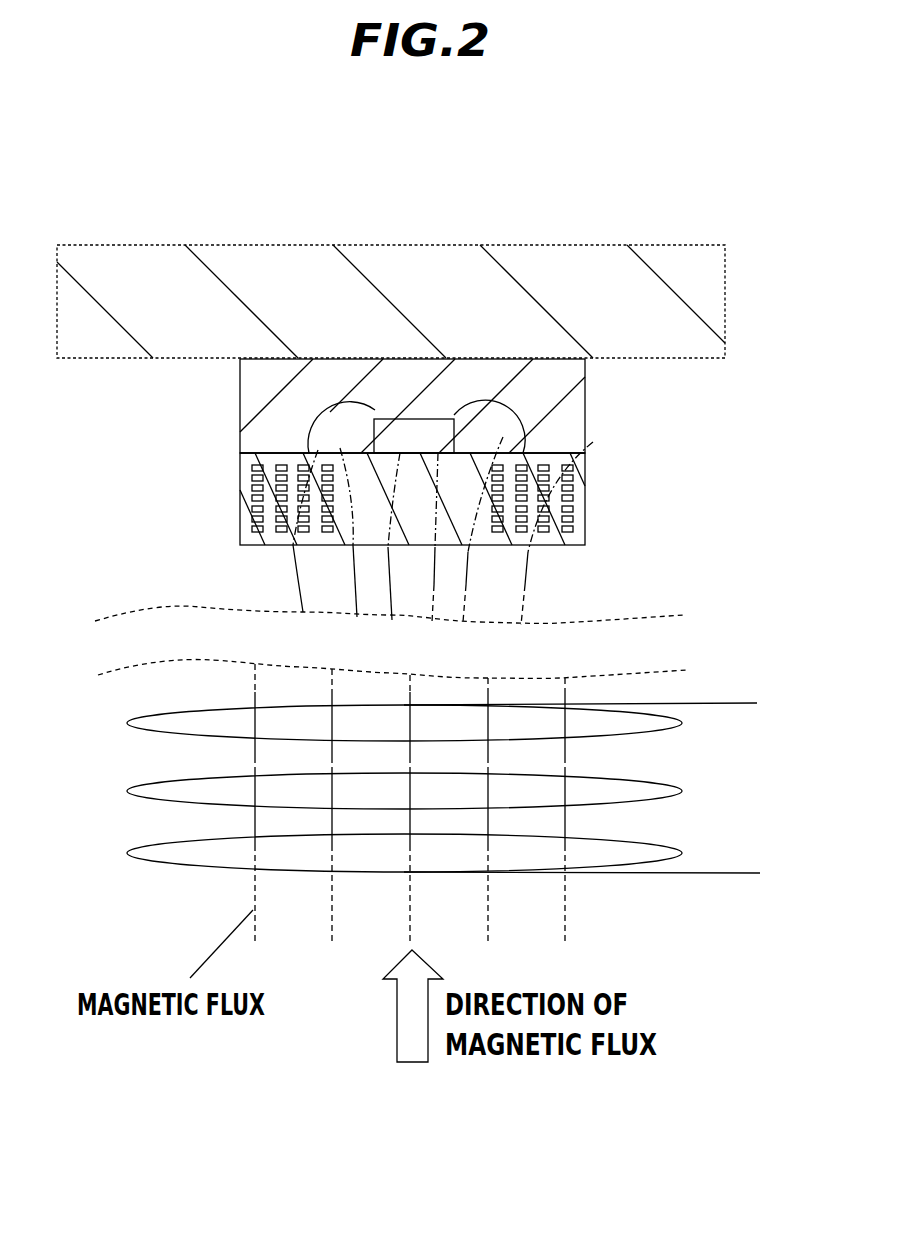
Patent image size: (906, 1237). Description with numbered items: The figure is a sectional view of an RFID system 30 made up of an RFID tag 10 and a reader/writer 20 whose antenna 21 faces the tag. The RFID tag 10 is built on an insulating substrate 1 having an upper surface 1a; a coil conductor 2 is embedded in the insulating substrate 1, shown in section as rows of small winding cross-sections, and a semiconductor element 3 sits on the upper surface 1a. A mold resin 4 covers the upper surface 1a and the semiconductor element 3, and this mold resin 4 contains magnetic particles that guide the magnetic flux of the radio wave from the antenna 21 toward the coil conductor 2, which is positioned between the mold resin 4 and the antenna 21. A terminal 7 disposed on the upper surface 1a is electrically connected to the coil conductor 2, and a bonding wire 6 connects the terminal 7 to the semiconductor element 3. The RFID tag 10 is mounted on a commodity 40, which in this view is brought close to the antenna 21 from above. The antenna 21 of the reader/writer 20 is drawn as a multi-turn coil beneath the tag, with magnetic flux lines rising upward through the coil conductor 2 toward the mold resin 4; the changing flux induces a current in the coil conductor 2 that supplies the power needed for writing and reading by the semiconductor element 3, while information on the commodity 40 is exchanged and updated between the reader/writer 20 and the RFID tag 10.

The insulating substrate 1 is at (577, 528).
The upper surface 1a is at (275, 462).
The coil conductor 2 is at (570, 470).
The semiconductor element 3 is at (399, 419).
The mold resin 4 is at (565, 397).
The bonding wire 6 is at (335, 402).
The terminal 7 is at (520, 450).
The RFID tag 10 is at (202, 485).
The reader/writer 20 is at (716, 692).
The antenna 21 is at (655, 853).
The RFID system 30 is at (148, 208).
The commodity 40 is at (609, 285).